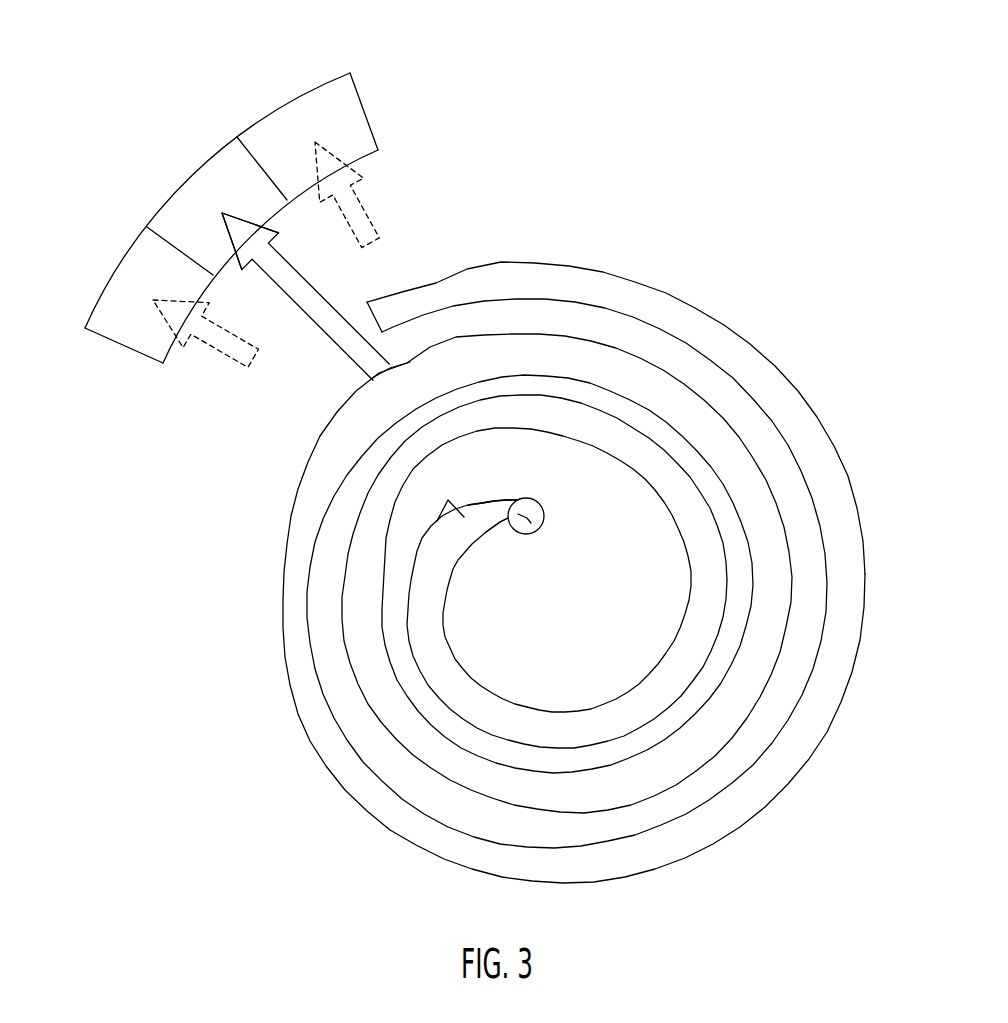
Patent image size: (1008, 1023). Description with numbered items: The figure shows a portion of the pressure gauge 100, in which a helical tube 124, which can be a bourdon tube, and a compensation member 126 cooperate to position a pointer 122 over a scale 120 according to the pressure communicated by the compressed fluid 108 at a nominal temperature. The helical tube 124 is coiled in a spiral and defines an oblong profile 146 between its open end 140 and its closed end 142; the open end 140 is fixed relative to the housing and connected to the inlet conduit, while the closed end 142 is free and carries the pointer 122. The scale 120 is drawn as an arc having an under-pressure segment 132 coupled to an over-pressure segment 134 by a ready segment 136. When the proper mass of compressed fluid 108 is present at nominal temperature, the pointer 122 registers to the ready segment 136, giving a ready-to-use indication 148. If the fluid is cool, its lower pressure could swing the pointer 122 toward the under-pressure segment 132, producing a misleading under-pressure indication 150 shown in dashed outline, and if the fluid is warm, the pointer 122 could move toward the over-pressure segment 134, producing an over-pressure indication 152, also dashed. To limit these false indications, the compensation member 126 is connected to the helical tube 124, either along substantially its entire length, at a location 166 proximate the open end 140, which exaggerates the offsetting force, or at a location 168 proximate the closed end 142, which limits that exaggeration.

The pressure gauge 100 is at (220, 850).
The compressed fluid 108 is at (529, 523).
The scale 120 is at (102, 184).
The pointer 122 is at (302, 290).
The helical tube 124 is at (537, 322).
The compensation member 126 is at (602, 270).
The under-pressure segment 132 is at (132, 337).
The over-pressure segment 134 is at (343, 107).
The ready segment 136 is at (223, 170).
The open end 140 is at (490, 501).
The closed end 142 is at (402, 370).
The oblong profile 146 is at (510, 518).
The ready-to-use indication 148 is at (222, 223).
The under-pressure indication 150 is at (157, 287).
The over-pressure indication 152 is at (312, 132).
The location proximate the open end 166 is at (441, 521).
The location proximate the closed end 168 is at (389, 312).